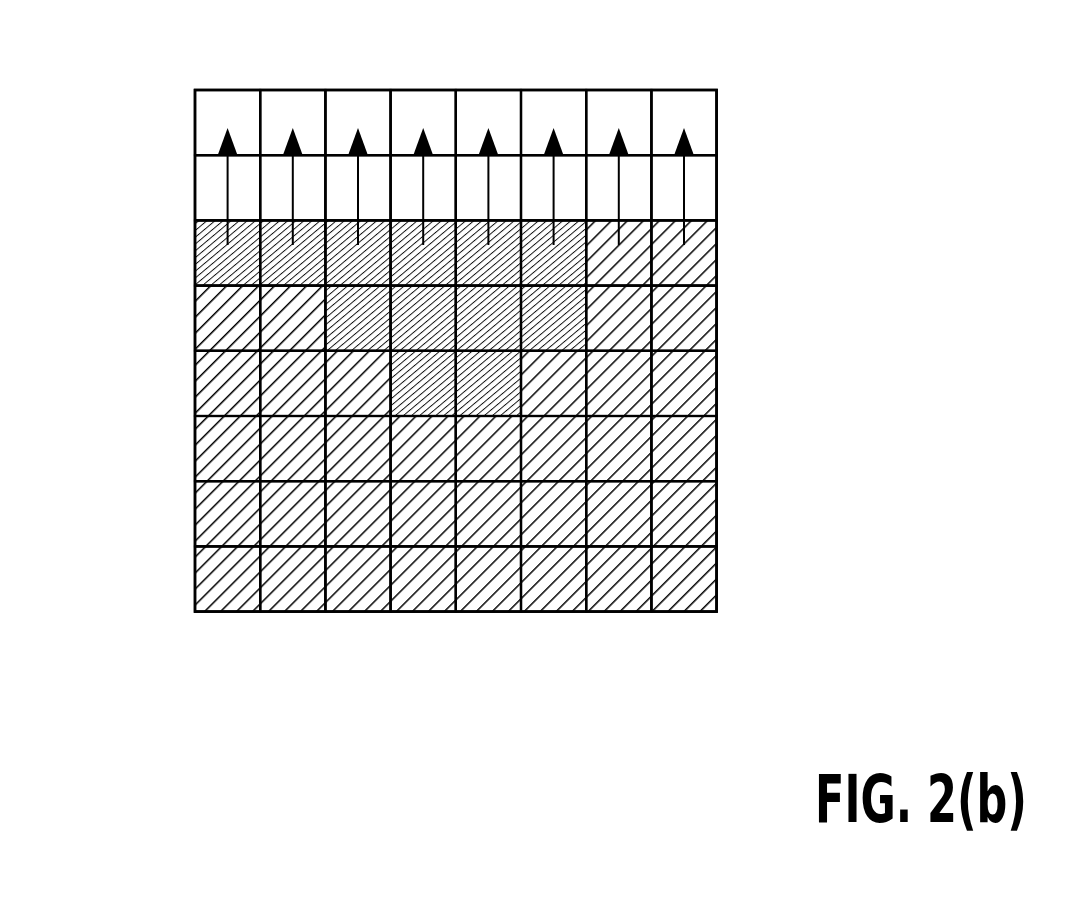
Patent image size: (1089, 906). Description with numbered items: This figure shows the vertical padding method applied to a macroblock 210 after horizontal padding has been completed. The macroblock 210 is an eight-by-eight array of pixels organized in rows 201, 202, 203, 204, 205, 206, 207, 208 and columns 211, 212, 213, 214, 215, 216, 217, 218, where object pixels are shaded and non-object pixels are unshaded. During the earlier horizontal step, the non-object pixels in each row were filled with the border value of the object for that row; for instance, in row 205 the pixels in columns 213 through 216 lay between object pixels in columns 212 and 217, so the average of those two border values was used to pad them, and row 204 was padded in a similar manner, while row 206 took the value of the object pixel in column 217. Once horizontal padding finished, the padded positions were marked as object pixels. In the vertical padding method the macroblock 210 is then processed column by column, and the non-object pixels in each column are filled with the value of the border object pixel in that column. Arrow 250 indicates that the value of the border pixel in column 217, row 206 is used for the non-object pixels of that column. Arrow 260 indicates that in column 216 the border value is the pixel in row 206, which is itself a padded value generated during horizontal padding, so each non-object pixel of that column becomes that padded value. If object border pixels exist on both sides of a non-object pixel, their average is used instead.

The macroblock 210 is at (902, 258).
The row 201 is at (425, 578).
The row 202 is at (425, 513).
The row 203 is at (425, 448).
The row 204 is at (425, 383).
The row 205 is at (425, 318).
The row 206 is at (425, 252).
The row 207 is at (425, 187).
The row 208 is at (425, 122).
The column 211 is at (227, 332).
The column 212 is at (292, 332).
The column 213 is at (357, 332).
The column 214 is at (423, 332).
The column 215 is at (488, 332).
The column 216 is at (553, 332).
The column 217 is at (618, 332).
The column 218 is at (683, 332).
The arrow 250 is at (623, 136).
The arrow 260 is at (558, 136).